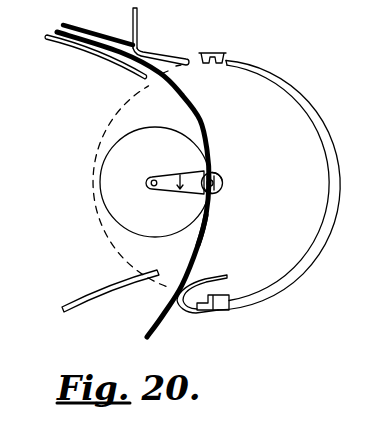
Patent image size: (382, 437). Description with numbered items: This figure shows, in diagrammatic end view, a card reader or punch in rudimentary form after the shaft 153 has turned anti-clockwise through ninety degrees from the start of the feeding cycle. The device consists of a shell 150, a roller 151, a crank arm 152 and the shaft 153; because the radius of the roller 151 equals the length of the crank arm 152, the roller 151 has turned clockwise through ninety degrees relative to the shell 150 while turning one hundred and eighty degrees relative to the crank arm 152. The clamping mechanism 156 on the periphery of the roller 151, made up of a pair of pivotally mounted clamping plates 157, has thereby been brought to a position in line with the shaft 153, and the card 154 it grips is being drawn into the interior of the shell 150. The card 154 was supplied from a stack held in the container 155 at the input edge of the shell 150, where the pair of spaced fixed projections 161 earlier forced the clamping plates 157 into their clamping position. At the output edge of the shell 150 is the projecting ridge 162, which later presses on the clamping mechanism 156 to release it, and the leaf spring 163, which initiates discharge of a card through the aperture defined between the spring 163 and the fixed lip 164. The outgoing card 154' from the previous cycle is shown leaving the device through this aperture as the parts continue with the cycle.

The shell 150 is at (278, 75).
The roller 151 is at (148, 132).
The crank arm 152 is at (163, 190).
The shaft 153 is at (224, 185).
The card 154 is at (143, 181).
The outgoing card 154' is at (224, 232).
The container 155 is at (139, 19).
The clamping mechanism 156 is at (226, 176).
The clamping plates 157 is at (217, 168).
The fixed projections 161 is at (209, 51).
The projecting ridge 162 is at (227, 297).
The leaf spring 163 is at (215, 278).
The fixed lip 164 is at (140, 283).